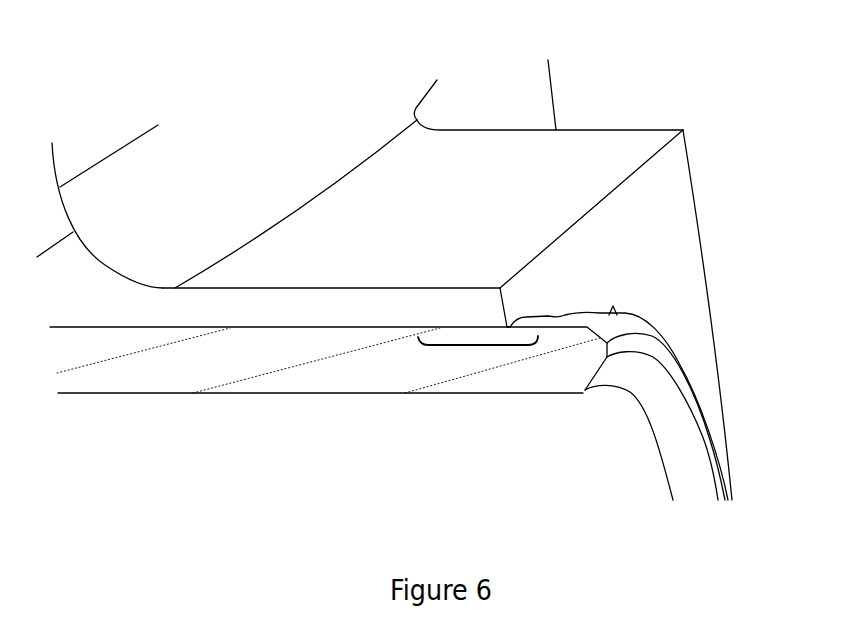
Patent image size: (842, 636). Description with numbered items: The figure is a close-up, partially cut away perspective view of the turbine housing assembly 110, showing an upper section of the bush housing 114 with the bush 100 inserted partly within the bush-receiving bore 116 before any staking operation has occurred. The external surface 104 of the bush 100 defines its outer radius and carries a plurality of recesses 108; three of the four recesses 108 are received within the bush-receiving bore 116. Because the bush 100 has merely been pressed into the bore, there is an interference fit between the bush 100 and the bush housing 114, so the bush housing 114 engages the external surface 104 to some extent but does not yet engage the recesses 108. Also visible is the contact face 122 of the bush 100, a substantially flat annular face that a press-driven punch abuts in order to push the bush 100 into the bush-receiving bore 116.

The turbine housing assembly 110 is at (301, 116).
The bush housing 114 is at (632, 255).
The bush-receiving bore 116 is at (402, 327).
The bush 100 is at (647, 463).
The external surface 104 is at (596, 310).
The contact face 122 is at (686, 381).
The recesses 108 is at (473, 345).